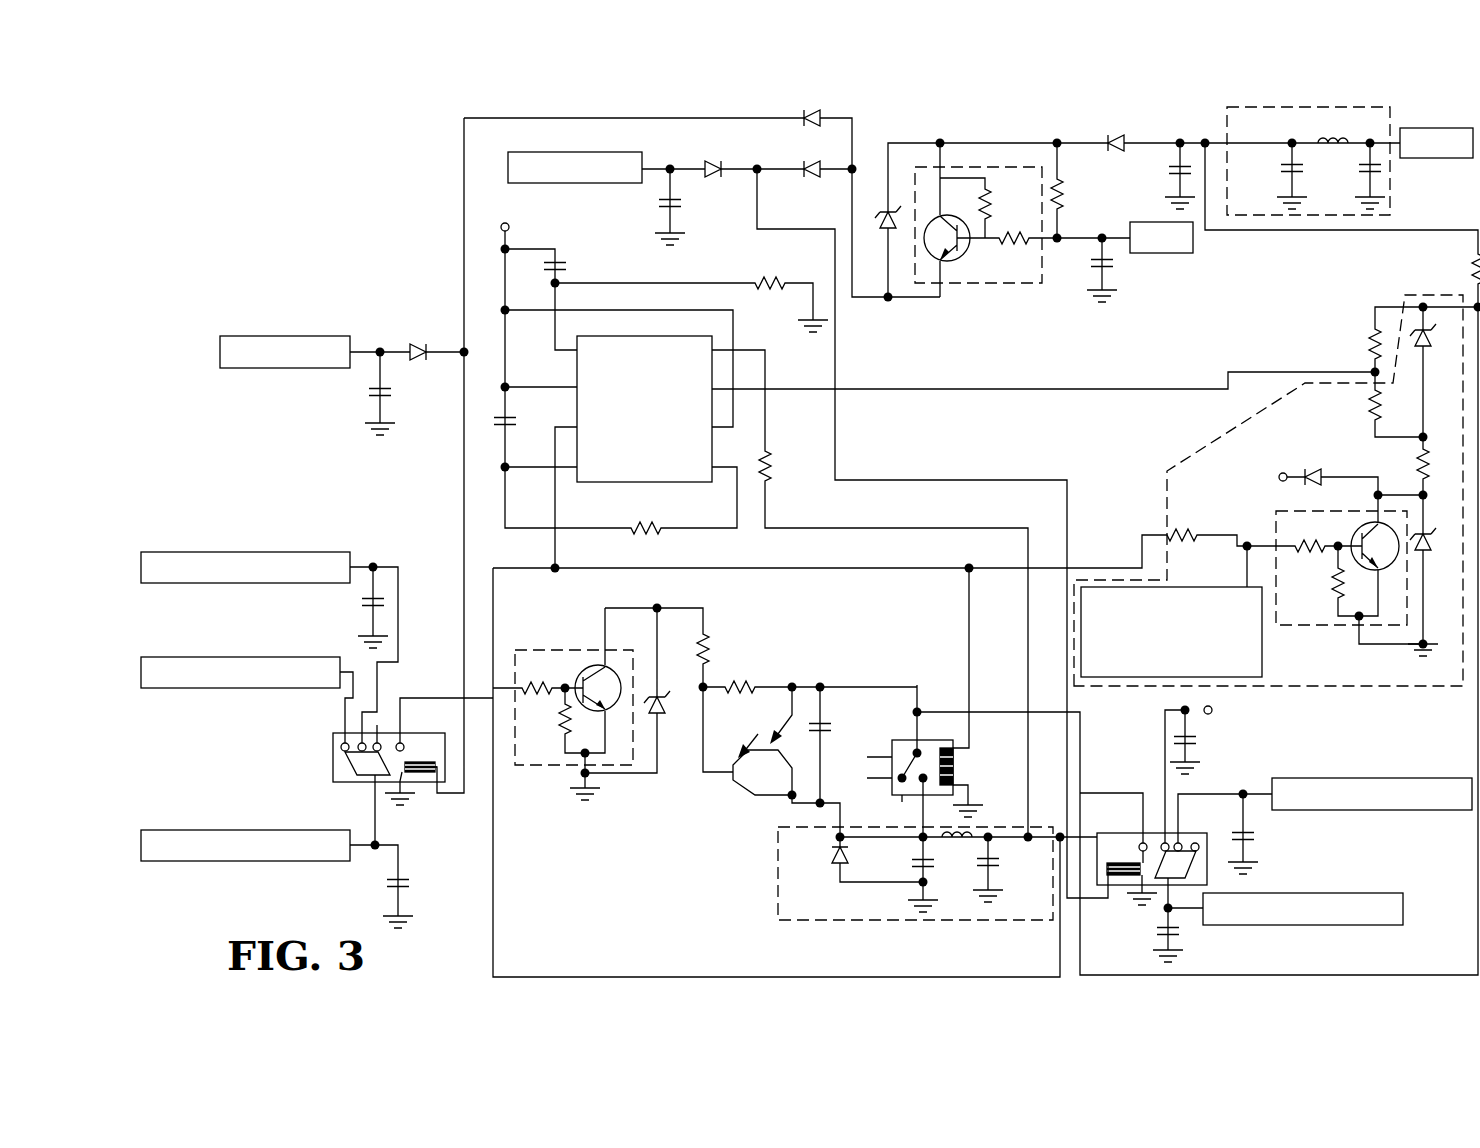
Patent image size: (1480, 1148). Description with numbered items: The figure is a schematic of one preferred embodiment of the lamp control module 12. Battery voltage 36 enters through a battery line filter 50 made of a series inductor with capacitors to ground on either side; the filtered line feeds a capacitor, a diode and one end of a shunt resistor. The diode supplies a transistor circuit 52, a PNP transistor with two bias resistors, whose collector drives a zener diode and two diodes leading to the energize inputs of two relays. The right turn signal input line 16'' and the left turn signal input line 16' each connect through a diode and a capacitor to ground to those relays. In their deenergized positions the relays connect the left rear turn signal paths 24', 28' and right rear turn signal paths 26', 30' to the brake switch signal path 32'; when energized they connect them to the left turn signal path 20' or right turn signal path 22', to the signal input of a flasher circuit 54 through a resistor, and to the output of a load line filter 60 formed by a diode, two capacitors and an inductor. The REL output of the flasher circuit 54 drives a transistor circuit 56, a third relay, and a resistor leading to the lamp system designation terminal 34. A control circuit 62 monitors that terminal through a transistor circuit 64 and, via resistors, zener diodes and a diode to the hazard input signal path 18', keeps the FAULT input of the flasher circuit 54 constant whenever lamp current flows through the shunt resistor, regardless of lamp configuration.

The lamp control module 12 is at (344, 236).
The left turn signal input line 16' is at (344, 376).
The right turn signal input line 16'' is at (632, 190).
The hazard input signal path 18' is at (1254, 372).
The left turn signal path 20' is at (269, 620).
The right turn signal path 22' is at (1325, 802).
The left rear turn signal path 24' is at (245, 818).
The right rear turn signal path 26' is at (1266, 901).
The left rear turn signal path 28' is at (292, 851).
The right rear turn signal path 30' is at (1306, 883).
The brake switch signal path 32' is at (766, 722).
The lamp system designation terminal 34 is at (1081, 615).
The battery voltage 36 is at (1438, 158).
The battery line filter 50 is at (1317, 215).
The transistor circuit 52 is at (983, 285).
The flasher circuit 54 is at (577, 358).
The transistor circuit 56 is at (535, 767).
The load line filter 60 is at (778, 880).
The control circuit 62 is at (1443, 693).
The transistor circuit 64 is at (1314, 627).